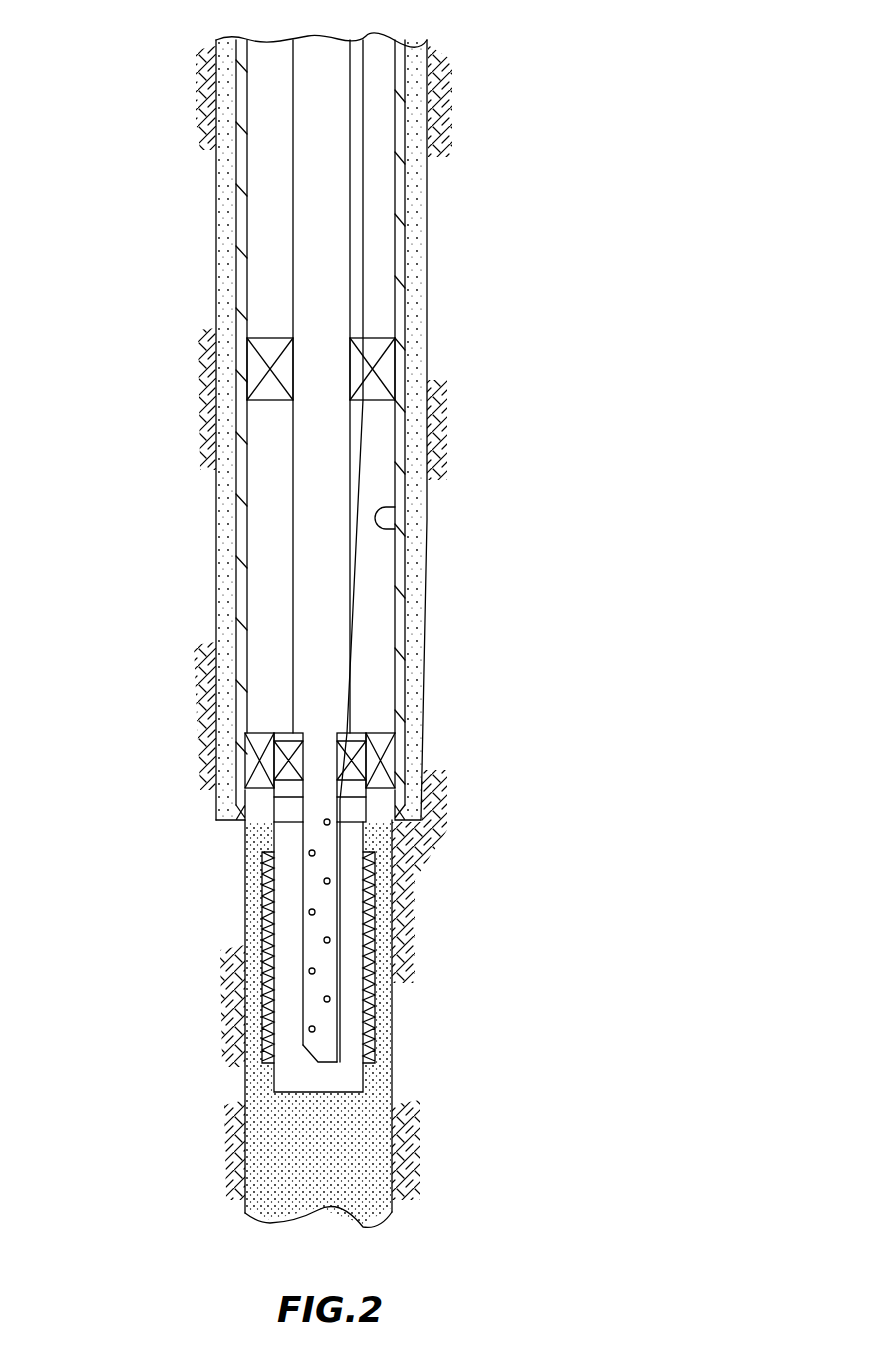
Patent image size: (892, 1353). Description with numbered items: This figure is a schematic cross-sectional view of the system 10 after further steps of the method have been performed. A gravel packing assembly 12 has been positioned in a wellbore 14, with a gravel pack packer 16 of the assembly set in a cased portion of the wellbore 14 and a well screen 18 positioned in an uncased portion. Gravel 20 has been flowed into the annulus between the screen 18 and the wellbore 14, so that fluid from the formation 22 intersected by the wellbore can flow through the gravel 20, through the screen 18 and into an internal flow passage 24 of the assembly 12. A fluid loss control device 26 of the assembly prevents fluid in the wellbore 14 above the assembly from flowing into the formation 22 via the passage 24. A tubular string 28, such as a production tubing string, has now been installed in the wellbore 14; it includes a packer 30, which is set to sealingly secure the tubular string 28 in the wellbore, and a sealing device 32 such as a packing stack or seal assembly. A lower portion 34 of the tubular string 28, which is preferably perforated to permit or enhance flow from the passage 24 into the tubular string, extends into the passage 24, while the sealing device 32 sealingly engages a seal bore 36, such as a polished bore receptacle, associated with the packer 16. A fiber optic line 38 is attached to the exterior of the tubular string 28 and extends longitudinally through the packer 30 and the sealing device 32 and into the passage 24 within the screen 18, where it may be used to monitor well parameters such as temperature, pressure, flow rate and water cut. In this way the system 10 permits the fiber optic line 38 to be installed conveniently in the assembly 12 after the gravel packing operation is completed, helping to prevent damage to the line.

The system 10 is at (603, 72).
The gravel packing assembly 12 is at (385, 843).
The wellbore 14 is at (400, 531).
The gravel pack packer 16 is at (377, 732).
The well screen 18 is at (378, 1000).
The gravel 20 is at (268, 1113).
The formation 22 is at (213, 1006).
The internal flow passage 24 is at (288, 927).
The fluid loss control device 26 is at (274, 806).
The tubular string 28 is at (291, 272).
The packer 30 is at (255, 402).
The sealing device 32 is at (247, 758).
The lower portion 34 is at (302, 1028).
The seal bore 36 is at (283, 731).
The fiber optic line 38 is at (363, 257).